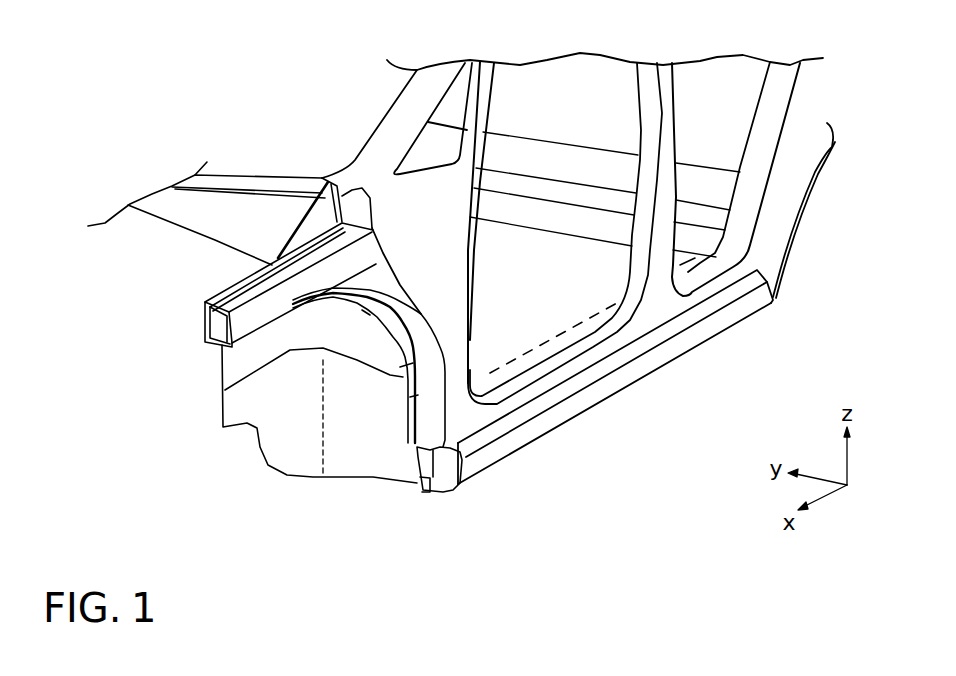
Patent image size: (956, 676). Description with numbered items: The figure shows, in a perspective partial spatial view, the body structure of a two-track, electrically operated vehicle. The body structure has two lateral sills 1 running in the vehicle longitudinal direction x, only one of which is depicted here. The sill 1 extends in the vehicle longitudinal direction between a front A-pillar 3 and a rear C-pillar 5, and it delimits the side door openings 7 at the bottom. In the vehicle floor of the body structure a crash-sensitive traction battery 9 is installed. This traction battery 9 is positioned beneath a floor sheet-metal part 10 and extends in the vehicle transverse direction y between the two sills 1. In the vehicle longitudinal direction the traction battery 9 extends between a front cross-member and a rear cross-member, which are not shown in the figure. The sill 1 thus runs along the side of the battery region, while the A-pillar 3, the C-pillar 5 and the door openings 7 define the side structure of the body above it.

The sill 1 is at (494, 464).
The front A-pillar 3 is at (423, 241).
The rear C-pillar 5 is at (797, 136).
The side door opening 7 is at (678, 111).
The traction battery 9 is at (563, 330).
The floor sheet-metal part 10 is at (531, 272).